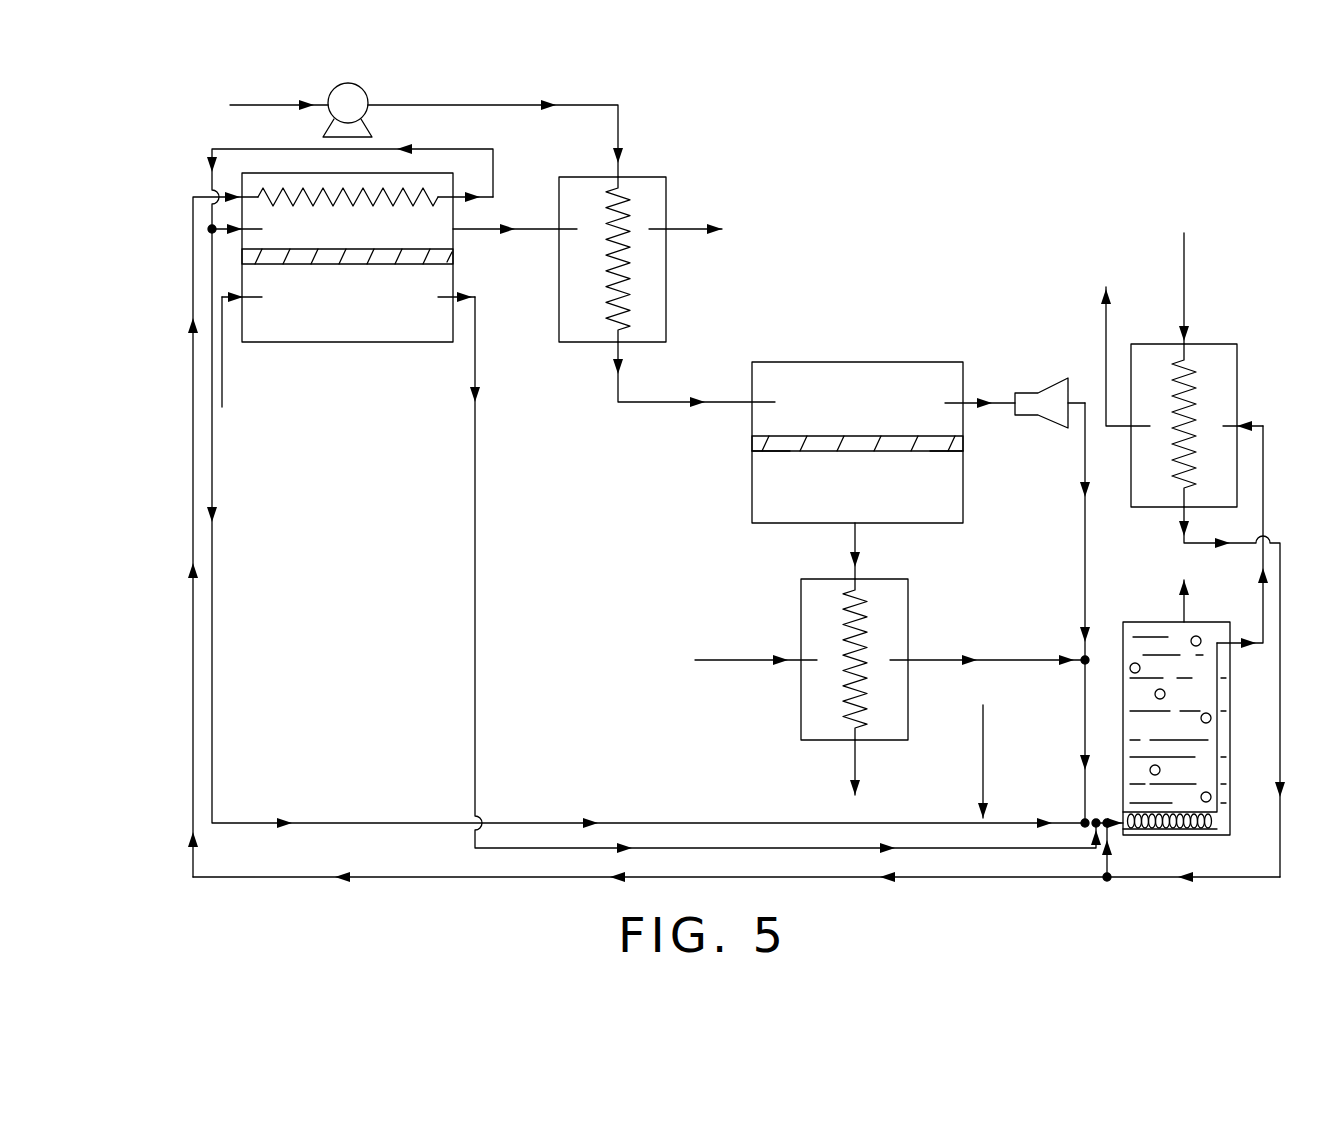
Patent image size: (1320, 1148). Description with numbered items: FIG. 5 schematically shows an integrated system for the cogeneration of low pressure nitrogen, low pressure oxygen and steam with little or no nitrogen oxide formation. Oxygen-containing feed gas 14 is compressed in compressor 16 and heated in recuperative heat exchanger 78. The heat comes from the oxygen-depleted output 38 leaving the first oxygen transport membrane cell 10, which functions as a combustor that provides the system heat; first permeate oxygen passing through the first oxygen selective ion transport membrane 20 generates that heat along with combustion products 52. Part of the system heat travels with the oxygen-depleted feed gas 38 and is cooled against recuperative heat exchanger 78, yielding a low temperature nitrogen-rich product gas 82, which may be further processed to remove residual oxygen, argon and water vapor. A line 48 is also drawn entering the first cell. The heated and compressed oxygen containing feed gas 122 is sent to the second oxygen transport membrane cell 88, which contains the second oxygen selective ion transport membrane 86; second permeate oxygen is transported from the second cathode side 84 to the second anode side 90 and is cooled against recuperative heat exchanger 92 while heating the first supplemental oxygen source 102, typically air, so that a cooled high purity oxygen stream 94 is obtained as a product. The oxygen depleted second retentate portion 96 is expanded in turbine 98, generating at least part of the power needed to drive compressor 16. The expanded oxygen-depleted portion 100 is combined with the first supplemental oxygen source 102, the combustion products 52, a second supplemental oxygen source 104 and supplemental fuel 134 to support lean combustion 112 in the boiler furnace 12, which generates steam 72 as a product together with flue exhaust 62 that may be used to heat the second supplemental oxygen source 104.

The first oxygen transport membrane cell 10 is at (380, 352).
The boiler furnace 12 is at (1137, 606).
The oxygen-containing feed gas 14 is at (260, 105).
The compressor 16 is at (358, 97).
The first oxygen selective ion transport membrane 20 is at (450, 257).
The oxygen-depleted output 38 is at (533, 228).
The supply line 48 is at (224, 381).
The combustion products 52 is at (476, 488).
The flue exhaust 62 is at (1263, 600).
The steam 72 is at (1187, 607).
The recuperative heat exchanger 78 is at (630, 222).
The nitrogen-rich product gas 82 is at (700, 233).
The second cathode side 84 is at (951, 442).
The second oxygen selective ion transport membrane 86 is at (752, 444).
The second oxygen transport membrane cell 88 is at (856, 352).
The second anode side 90 is at (940, 455).
The recuperative heat exchanger 92 is at (863, 645).
The cooled high purity oxygen stream 94 is at (857, 765).
The oxygen depleted second retentate portion 96 is at (1003, 399).
The turbine 98 is at (1037, 397).
The expanded oxygen-depleted portion 100 is at (1085, 538).
The first supplemental oxygen source 102 is at (733, 663).
The second supplemental oxygen source 104 is at (1186, 287).
The lean combustion 112 is at (1178, 830).
The heated and compressed oxygen containing feed gas 122 is at (655, 405).
The supplemental fuel 134 is at (984, 763).